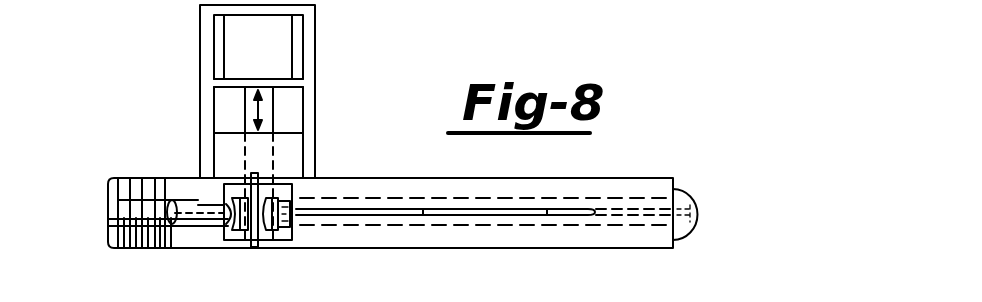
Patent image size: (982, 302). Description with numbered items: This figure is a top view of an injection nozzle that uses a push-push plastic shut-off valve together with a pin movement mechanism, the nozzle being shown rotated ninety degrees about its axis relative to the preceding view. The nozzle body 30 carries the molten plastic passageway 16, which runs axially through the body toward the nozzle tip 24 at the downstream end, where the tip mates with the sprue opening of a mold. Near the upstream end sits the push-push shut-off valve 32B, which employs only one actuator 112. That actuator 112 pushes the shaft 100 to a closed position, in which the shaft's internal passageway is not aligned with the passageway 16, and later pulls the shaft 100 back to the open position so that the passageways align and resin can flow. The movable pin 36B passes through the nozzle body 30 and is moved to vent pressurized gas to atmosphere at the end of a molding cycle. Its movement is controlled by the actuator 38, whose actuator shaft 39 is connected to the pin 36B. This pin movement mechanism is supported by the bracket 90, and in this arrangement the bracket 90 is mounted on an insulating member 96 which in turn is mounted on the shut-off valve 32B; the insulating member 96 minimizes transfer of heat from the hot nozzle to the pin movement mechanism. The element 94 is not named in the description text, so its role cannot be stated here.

The molten plastic passageway 16 is at (120, 211).
The nozzle tip 24 is at (683, 236).
The nozzle body 30 is at (504, 249).
The push-push shut-off valve 32B is at (200, 60).
The movable pin 36B is at (520, 212).
The actuator 38 is at (198, 207).
The actuator shaft 39 is at (227, 230).
The bracket 90 is at (255, 247).
The block 94 is at (290, 196).
The insulating member 96 is at (283, 229).
The shaft 100 is at (272, 107).
The actuator 112 is at (272, 46).